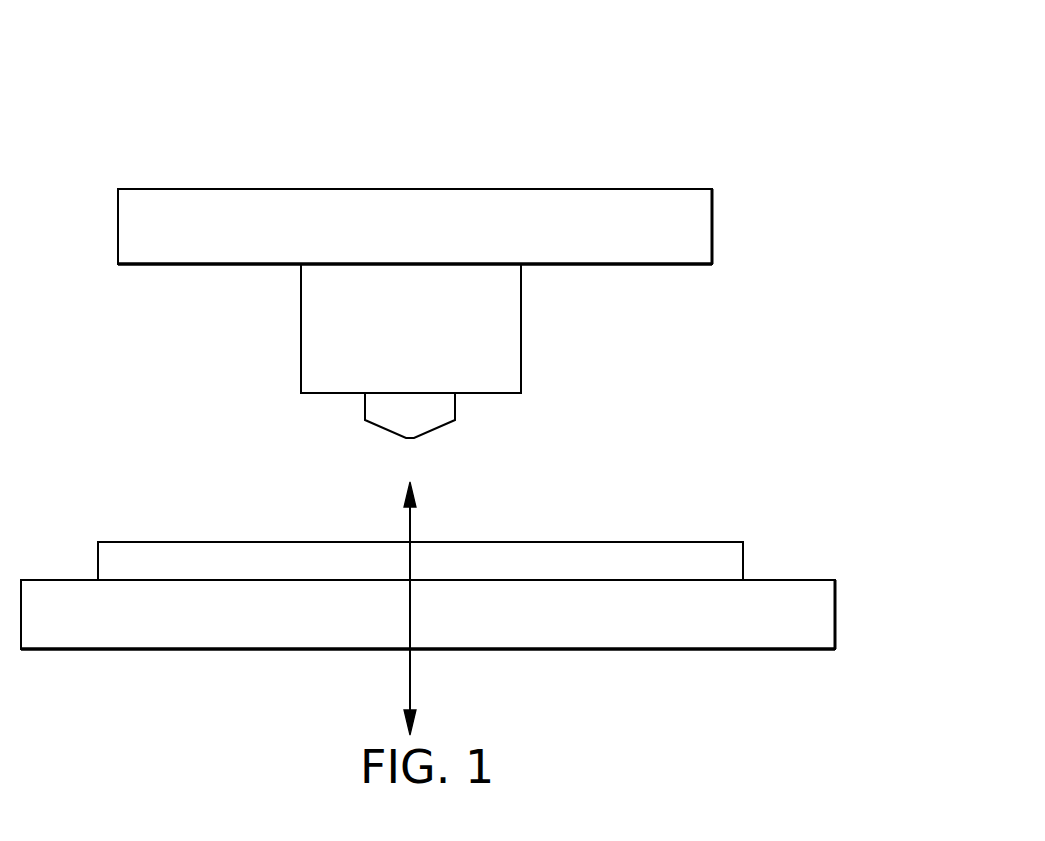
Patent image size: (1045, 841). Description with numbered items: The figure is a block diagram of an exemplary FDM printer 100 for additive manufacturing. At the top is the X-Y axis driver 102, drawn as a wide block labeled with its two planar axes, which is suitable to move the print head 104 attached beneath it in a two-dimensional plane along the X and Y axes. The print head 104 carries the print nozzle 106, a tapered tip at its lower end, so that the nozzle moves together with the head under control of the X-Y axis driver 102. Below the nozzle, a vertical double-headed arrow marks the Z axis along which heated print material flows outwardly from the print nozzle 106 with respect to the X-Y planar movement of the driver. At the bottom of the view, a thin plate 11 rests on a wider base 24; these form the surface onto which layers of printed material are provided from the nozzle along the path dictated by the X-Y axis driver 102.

The FDM printer 100 is at (768, 50).
The X-Y axis driver 102 is at (712, 222).
The print head 104 is at (435, 341).
The print nozzle 106 is at (455, 420).
The substrate 11 is at (617, 542).
The build platform 24 is at (835, 620).